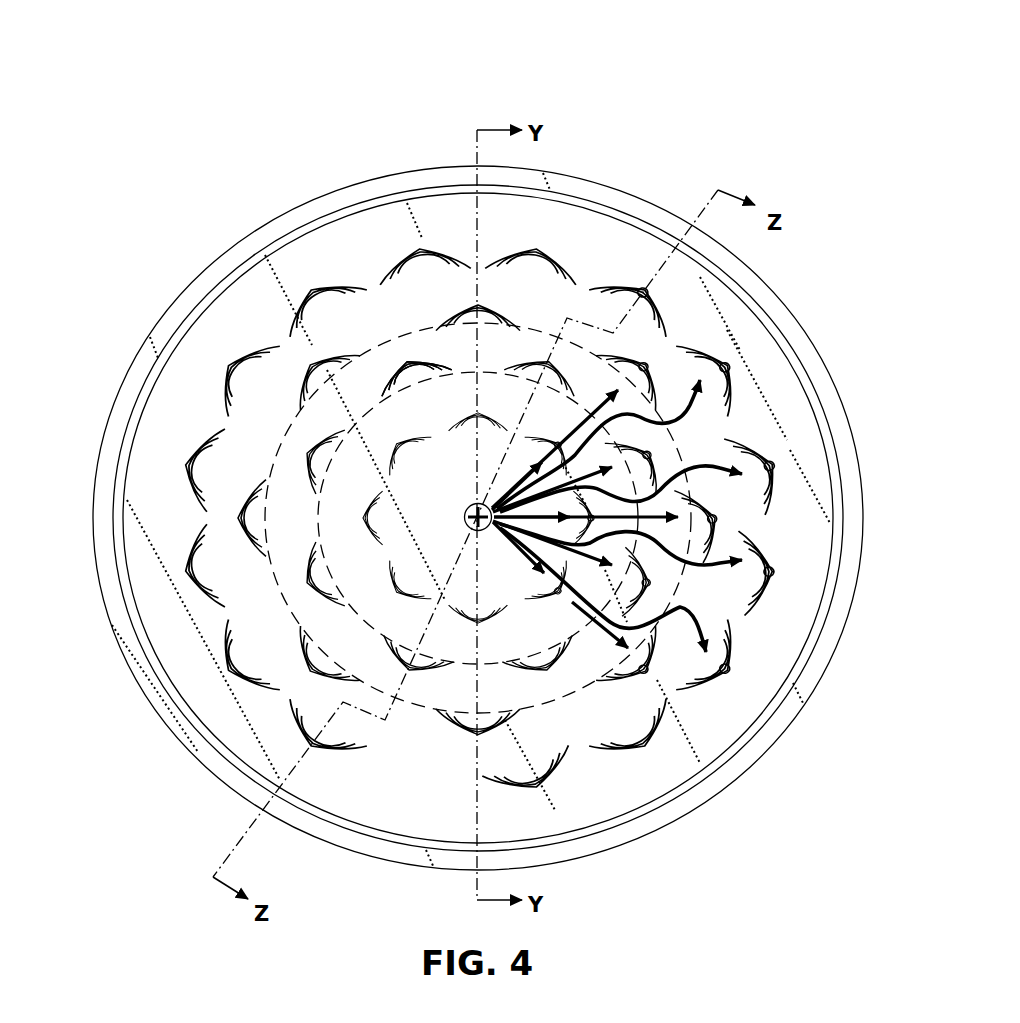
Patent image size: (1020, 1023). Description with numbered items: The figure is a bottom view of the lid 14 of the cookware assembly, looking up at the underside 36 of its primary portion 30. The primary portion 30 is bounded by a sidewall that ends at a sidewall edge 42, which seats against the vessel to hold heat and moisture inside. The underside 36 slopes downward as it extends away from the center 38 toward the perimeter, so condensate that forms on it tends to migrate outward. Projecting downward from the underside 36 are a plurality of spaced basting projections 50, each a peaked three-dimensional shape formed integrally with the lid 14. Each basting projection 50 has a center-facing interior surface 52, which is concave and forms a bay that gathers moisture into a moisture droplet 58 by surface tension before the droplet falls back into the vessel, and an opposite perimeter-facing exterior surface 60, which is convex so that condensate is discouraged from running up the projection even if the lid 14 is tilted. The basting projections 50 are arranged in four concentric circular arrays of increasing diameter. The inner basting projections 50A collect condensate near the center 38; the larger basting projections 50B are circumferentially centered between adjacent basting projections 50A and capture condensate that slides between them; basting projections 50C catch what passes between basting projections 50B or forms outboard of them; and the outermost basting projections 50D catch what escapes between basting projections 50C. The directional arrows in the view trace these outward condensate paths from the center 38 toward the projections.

The lid 14 is at (108, 72).
The primary portion 30 is at (152, 440).
The underside 36 is at (153, 613).
The center 38 is at (466, 521).
The sidewall edge 42 is at (155, 655).
The basting projection 50 is at (232, 362).
The basting projections of inner circular array 50A is at (408, 355).
The basting projections of second circular array 50B is at (414, 356).
The basting projections of third circular array 50C is at (298, 338).
The basting projections of outer circular array 50D is at (317, 283).
The interior surface 52 is at (632, 728).
The moisture droplet 58 is at (778, 456).
The exterior surface 60 is at (640, 742).